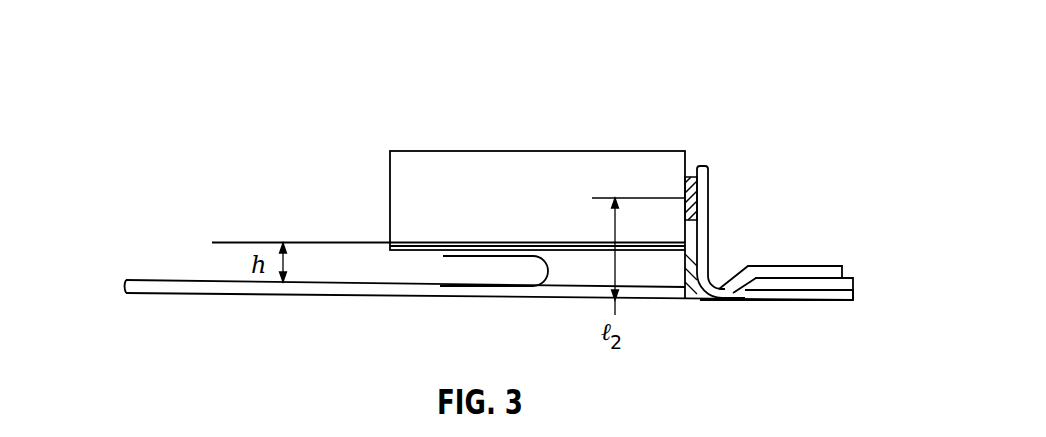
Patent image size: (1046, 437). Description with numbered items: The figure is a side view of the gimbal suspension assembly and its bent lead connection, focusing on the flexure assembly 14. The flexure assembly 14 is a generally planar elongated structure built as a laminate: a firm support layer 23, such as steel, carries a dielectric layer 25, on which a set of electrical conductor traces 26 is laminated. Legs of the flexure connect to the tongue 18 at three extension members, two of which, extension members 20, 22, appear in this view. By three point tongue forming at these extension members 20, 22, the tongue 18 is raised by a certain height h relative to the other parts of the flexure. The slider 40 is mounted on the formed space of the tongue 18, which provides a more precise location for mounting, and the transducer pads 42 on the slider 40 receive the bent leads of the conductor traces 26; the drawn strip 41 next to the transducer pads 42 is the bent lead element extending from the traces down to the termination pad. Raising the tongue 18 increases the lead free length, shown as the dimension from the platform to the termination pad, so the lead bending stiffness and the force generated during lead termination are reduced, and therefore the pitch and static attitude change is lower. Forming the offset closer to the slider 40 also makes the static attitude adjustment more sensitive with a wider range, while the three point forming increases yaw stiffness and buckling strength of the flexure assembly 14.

The flexure assembly 14 is at (326, 128).
The slider 40 is at (492, 151).
The transducer pads 42 is at (687, 178).
The contact spring strip 41 is at (710, 198).
The extension member 22 is at (689, 288).
The electrical conductor traces 26 is at (776, 267).
The dielectric layer 25 is at (855, 283).
The support layer 23 is at (856, 296).
The tongue 18 is at (447, 257).
The extension member 20 is at (597, 265).